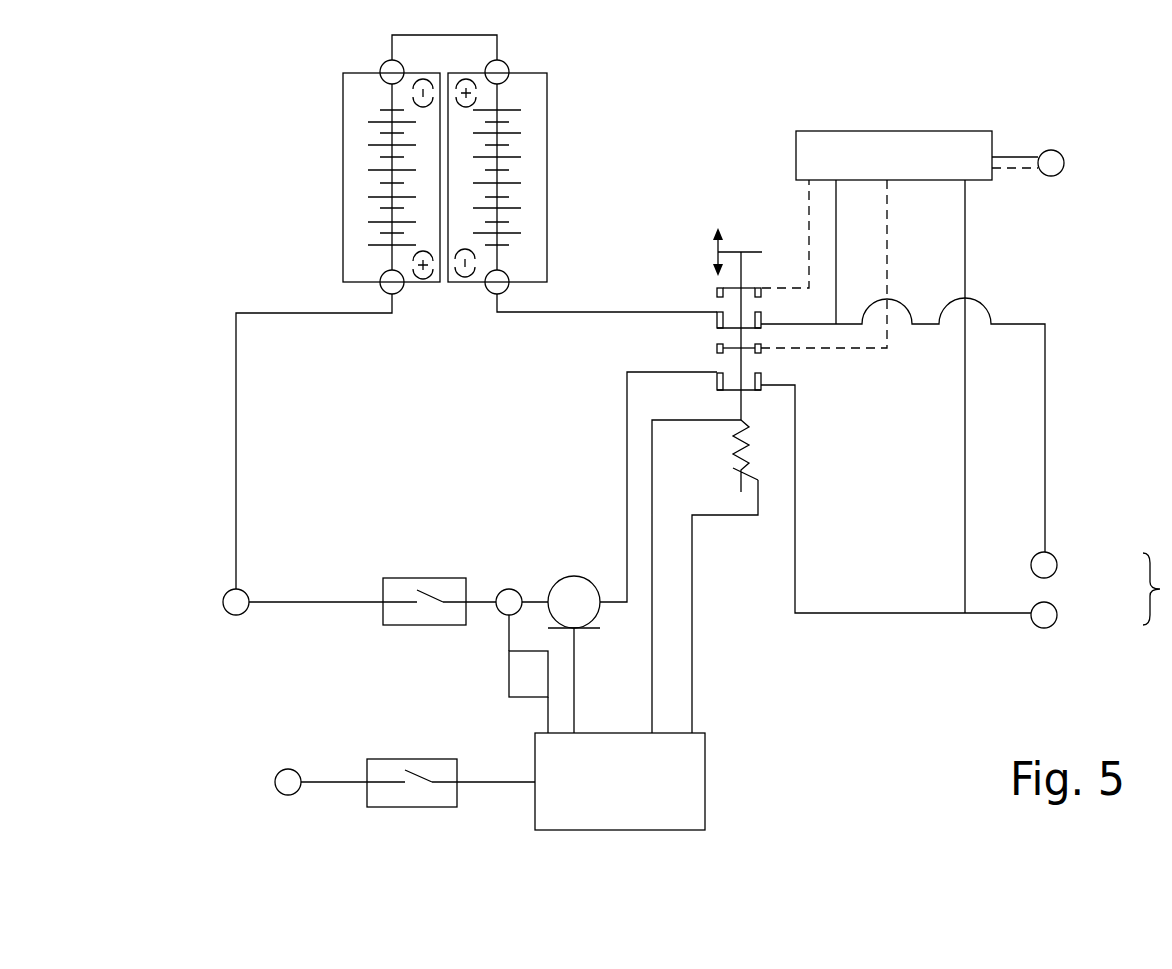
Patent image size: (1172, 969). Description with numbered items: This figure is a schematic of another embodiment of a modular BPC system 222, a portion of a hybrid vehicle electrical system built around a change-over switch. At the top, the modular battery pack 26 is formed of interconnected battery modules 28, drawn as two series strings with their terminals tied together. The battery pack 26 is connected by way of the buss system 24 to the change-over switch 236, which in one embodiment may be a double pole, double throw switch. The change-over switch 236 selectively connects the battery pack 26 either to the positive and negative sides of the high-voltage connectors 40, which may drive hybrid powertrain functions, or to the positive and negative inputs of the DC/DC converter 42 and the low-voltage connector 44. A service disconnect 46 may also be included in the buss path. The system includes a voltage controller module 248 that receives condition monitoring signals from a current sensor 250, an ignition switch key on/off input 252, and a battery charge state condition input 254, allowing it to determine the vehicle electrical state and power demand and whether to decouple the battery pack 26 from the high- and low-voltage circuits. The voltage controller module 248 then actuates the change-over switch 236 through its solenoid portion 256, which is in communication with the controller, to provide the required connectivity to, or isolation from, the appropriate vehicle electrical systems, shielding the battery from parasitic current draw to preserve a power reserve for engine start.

The modular BPC system 222 is at (407, 164).
The modular battery pack 26 is at (575, 118).
The battery modules 28 is at (453, 168).
The buss system 24 is at (237, 457).
The service disconnect 46 is at (422, 578).
The current sensor 250 is at (570, 577).
The battery charge state condition input 254 is at (509, 677).
The ignition switch key on/off input 252 is at (367, 766).
The voltage controller module 248 is at (705, 779).
The solenoid portion 256 is at (773, 482).
The change-over switch 236 is at (670, 349).
The DC/DC converter 42 is at (942, 131).
The low-voltage connector 44 is at (1057, 151).
The high-voltage connectors 40 is at (1104, 518).